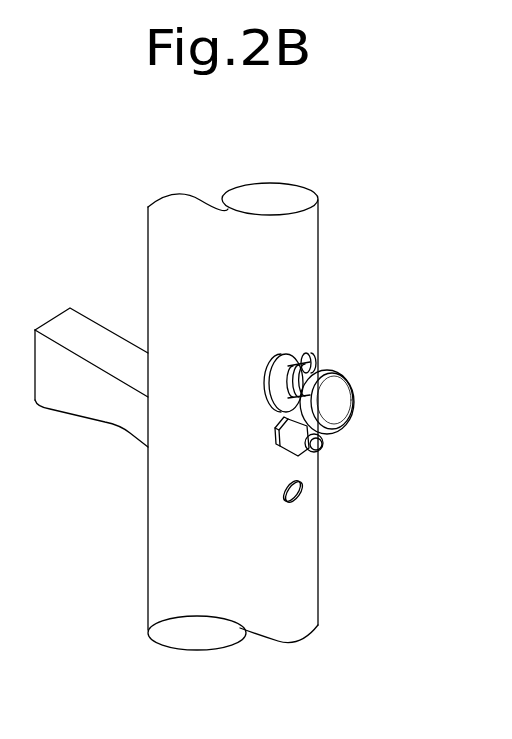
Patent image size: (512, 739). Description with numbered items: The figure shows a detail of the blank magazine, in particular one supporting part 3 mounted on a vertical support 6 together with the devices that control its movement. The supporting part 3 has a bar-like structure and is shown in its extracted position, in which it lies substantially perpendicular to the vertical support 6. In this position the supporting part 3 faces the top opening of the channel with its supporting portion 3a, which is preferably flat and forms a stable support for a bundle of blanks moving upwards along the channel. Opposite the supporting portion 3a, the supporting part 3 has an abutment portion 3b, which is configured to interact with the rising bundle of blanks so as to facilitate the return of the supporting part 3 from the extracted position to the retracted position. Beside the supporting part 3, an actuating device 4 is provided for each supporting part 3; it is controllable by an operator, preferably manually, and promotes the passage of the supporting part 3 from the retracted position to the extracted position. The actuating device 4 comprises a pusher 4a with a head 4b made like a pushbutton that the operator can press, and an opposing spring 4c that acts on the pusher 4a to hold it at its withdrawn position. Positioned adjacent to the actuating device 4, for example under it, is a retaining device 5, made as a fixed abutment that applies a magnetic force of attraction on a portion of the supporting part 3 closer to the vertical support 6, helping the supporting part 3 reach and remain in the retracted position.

The supporting part 3 is at (53, 296).
The supporting portion 3a is at (93, 343).
The abutment portion 3b is at (77, 418).
The actuating device 4 is at (364, 396).
The pusher 4a is at (318, 366).
The head 4b is at (334, 408).
The opposing spring 4c is at (298, 363).
The retaining device 5 is at (344, 445).
The vertical support 6 is at (146, 242).